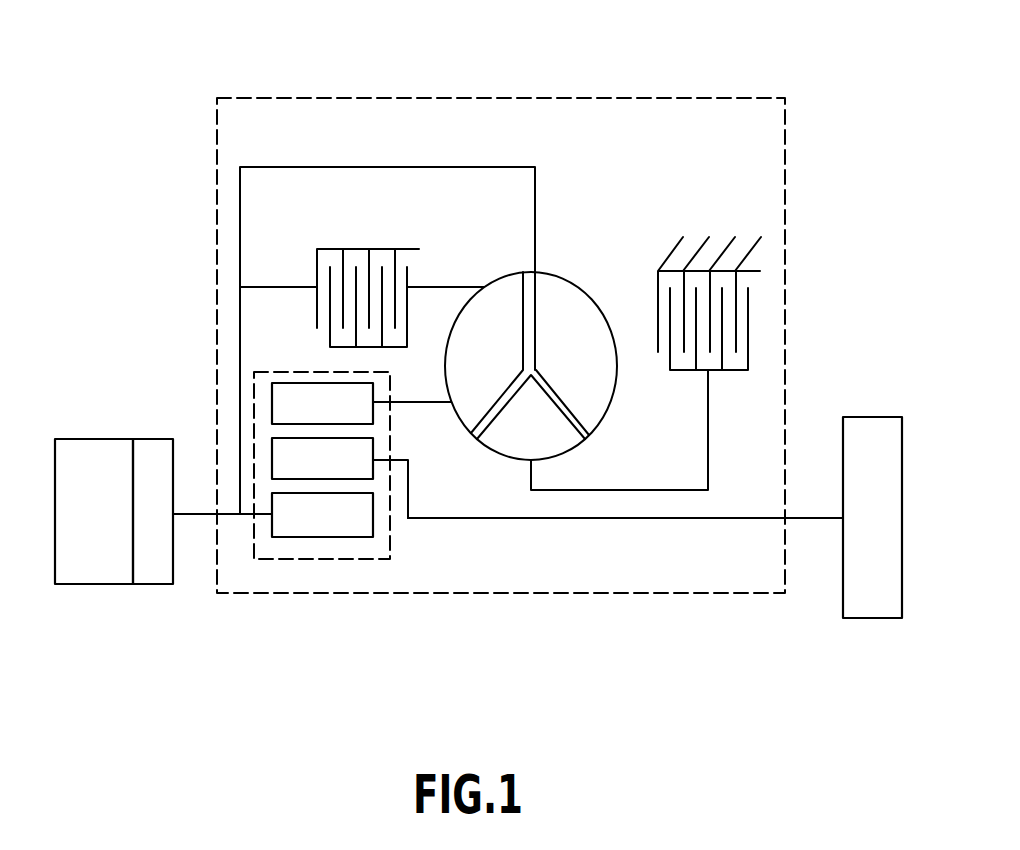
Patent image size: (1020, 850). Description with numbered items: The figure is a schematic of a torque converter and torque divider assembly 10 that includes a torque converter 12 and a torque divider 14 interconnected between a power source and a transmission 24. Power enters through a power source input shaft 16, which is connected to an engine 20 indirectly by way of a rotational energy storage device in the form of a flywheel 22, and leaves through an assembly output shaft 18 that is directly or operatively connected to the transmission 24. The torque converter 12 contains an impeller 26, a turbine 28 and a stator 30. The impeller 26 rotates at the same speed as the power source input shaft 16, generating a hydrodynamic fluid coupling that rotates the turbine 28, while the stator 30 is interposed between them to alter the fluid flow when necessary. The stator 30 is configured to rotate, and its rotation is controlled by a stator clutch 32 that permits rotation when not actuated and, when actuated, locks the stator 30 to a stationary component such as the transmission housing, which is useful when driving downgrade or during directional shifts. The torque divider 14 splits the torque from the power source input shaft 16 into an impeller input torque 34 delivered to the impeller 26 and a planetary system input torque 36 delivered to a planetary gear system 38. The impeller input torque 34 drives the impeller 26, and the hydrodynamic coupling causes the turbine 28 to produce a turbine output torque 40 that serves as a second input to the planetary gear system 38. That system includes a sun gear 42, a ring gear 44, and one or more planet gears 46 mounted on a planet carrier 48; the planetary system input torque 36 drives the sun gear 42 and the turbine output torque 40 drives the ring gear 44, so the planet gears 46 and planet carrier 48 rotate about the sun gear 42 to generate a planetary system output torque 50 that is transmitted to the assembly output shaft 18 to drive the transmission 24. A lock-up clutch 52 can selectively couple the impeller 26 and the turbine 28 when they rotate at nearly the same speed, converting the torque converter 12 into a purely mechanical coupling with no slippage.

The torque converter and torque divider assembly 10 is at (356, 98).
The torque converter 12 is at (572, 243).
The torque divider 14 is at (359, 489).
The power source input shaft 16 is at (197, 514).
The assembly output shaft 18 is at (816, 518).
The engine 20 is at (93, 439).
The flywheel 22 is at (147, 439).
The transmission 24 is at (870, 417).
The impeller 26 is at (557, 303).
The turbine 28 is at (502, 300).
The stator 30 is at (520, 445).
The stator clutch 32 is at (748, 326).
The impeller input torque 34 is at (537, 187).
The planetary system input torque 36 is at (232, 514).
The planetary gear system 38 is at (368, 560).
The turbine output torque 40 is at (428, 402).
The sun gear 42 is at (300, 559).
The ring gear 44 is at (320, 383).
The planet gears 46 is at (373, 458).
The planet carrier 48 is at (390, 489).
The planetary system output torque 50 is at (627, 518).
The lock-up clutch 52 is at (356, 249).